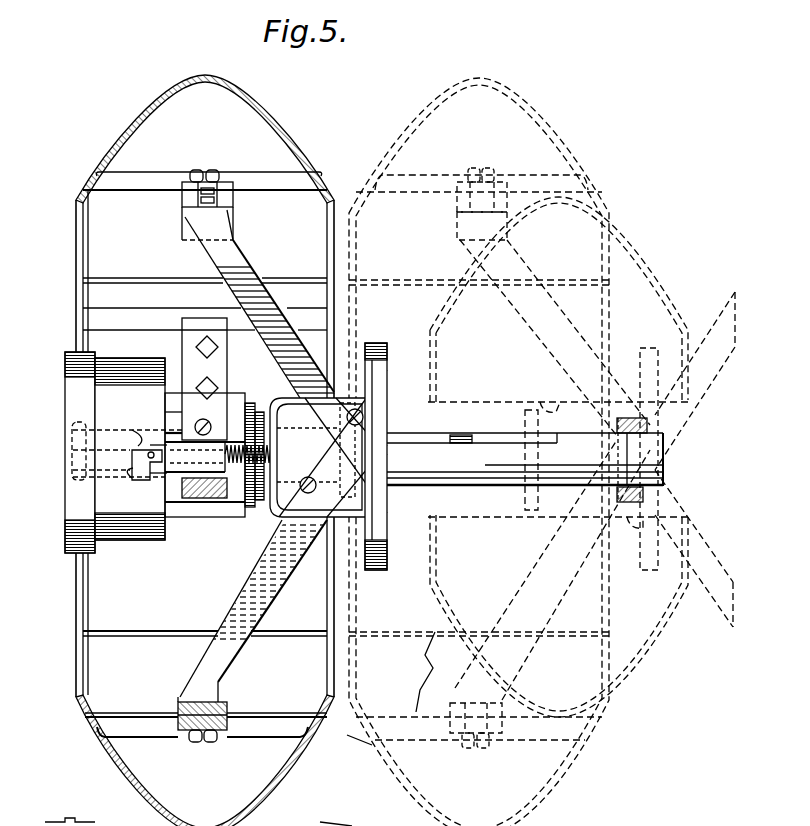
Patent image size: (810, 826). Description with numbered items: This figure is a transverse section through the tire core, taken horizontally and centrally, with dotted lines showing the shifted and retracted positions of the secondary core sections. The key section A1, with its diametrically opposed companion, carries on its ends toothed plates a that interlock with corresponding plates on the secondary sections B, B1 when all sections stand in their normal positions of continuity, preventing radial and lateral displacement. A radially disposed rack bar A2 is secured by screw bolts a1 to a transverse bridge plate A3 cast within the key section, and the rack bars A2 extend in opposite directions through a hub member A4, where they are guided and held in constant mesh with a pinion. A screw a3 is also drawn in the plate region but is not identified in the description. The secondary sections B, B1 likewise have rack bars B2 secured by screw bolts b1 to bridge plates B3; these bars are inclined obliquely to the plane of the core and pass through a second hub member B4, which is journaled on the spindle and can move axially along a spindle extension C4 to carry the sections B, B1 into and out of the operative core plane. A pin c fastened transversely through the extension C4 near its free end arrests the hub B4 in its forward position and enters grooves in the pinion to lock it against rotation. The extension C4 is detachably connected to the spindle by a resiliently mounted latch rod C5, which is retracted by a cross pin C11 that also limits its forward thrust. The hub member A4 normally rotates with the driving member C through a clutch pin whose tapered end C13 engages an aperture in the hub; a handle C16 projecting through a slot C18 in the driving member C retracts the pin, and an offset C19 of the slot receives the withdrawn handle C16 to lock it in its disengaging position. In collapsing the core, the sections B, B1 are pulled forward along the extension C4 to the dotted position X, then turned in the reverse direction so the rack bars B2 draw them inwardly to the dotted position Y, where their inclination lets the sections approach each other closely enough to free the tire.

The secondary core section B is at (299, 762).
The secondary core section B1 is at (280, 114).
The rack bar B2 is at (248, 268).
The bridge plate B3 is at (188, 183).
The screw bolt b1 is at (207, 170).
The second hub member B4 is at (282, 520).
The toothed plate a is at (278, 281).
The key section A1 is at (172, 618).
The rack bar A2 is at (218, 420).
The bridge plate A3 is at (197, 308).
The hub member A4 is at (232, 508).
The screw bolt a1 is at (214, 351).
The screw a3 is at (207, 415).
The driving member C is at (123, 452).
The spindle extension C4 is at (467, 457).
The latch rod C5 is at (420, 438).
The cross pin C11 is at (312, 398).
The tapered end C13 is at (175, 452).
The handle C16 is at (136, 472).
The slot C18 is at (132, 430).
The offset C19 is at (132, 468).
The pin c is at (666, 477).
The shifted position X is at (560, 146).
The retracted position Y is at (637, 246).